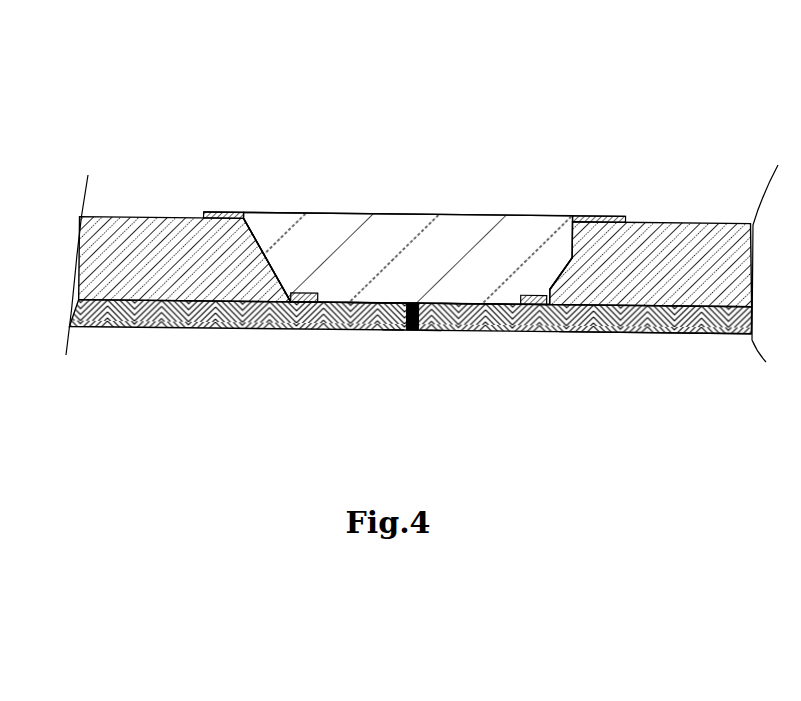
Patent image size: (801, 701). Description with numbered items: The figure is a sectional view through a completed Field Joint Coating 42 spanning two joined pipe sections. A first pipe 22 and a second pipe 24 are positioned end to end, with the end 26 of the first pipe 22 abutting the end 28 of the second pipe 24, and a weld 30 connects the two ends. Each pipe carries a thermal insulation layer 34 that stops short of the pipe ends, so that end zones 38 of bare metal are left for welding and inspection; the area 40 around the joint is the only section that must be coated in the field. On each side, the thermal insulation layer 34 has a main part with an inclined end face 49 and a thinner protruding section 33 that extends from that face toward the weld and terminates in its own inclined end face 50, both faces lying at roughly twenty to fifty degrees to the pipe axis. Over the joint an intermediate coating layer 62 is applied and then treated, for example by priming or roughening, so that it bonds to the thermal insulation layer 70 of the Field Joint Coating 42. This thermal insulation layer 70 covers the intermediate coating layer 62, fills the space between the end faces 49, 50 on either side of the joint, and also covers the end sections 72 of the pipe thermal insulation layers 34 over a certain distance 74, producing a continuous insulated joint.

The first pipe 22 is at (154, 329).
The second pipe 24 is at (568, 333).
The end of the first pipe 26 is at (380, 314).
The end of the second pipe 28 is at (392, 327).
The weld 30 is at (410, 329).
The protruding section 33 is at (283, 304).
The thermal insulation layer 34 is at (108, 215).
The end zones 38 is at (451, 318).
The area around the field joint 40 is at (487, 147).
The Field Joint Coating 42 is at (441, 133).
The inclined end face of the main part 49 is at (317, 297).
The inclined end face of the protruding section 50 is at (324, 300).
The intermediate coating layer 62 is at (495, 298).
The thermal insulation layer of the Field Joint Coating 70 is at (340, 236).
The end sections of the thermal insulation layers 72 is at (608, 222).
The distance 74 is at (228, 211).